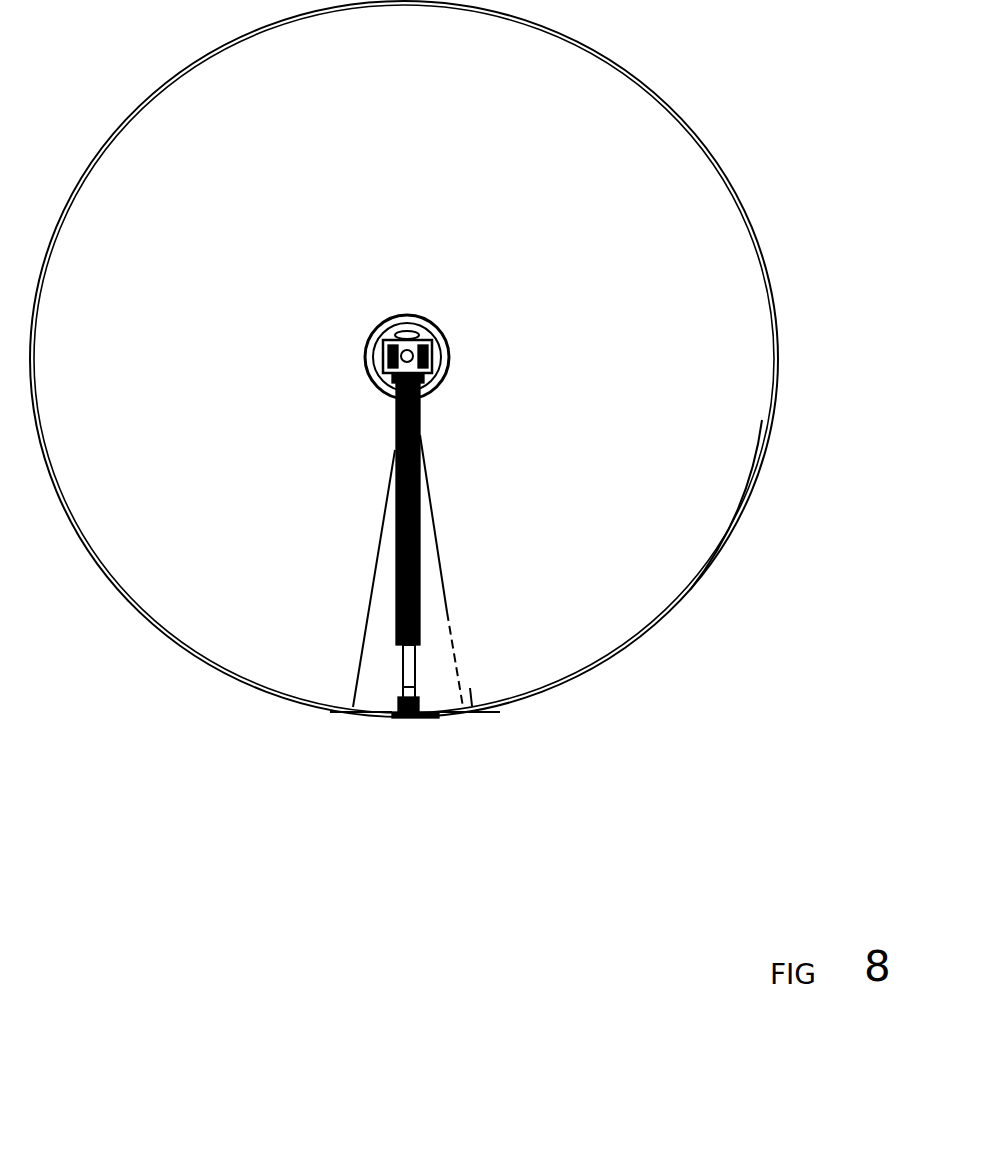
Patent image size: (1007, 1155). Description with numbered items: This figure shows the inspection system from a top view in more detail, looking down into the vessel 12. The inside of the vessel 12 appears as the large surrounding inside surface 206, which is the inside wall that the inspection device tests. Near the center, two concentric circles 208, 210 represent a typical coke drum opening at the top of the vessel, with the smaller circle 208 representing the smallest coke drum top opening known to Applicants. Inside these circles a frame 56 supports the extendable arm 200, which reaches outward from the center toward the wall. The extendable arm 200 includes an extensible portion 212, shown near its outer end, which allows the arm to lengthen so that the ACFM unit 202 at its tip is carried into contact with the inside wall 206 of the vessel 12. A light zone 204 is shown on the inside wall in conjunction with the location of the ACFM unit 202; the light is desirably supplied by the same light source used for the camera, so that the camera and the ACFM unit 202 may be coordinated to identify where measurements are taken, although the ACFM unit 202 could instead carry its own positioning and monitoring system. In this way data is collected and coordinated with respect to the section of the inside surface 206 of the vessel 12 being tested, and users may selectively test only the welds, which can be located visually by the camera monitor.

The vessel 12 is at (777, 383).
The frame 56 is at (432, 355).
The extendable arm 200 is at (418, 552).
The ACFM unit 202 is at (422, 705).
The light zone 204 is at (453, 613).
The inside surface 206 is at (758, 458).
The circle 208 is at (441, 335).
The circle 210 is at (429, 322).
The extensible portion 212 is at (417, 668).